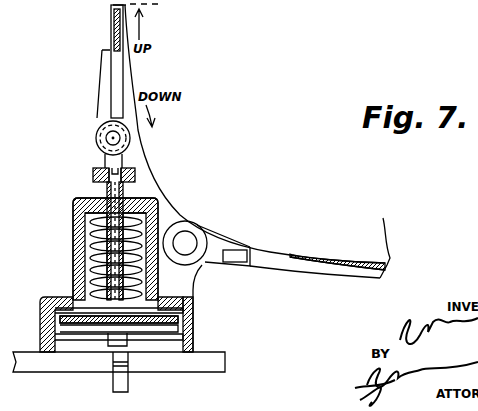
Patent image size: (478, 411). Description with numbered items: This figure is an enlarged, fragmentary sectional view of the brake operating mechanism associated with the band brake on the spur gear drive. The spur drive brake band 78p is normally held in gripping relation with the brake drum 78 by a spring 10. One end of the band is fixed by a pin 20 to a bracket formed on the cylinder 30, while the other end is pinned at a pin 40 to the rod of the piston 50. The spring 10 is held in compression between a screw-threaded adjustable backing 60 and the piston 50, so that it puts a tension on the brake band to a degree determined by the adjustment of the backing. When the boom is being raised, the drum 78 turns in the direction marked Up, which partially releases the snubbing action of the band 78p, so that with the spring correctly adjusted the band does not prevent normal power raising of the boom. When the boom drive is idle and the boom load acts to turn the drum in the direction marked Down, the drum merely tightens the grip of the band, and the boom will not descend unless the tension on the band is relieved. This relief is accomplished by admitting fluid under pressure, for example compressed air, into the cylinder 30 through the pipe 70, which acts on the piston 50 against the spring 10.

The spring 10 is at (74, 259).
The pin 20 is at (187, 246).
The cylinder 30 is at (194, 312).
The pin 40 is at (106, 136).
The piston 50 is at (40, 313).
The screw-threaded adjustable backing 60 is at (93, 190).
The pipe 70 is at (113, 386).
The brake drum 78 is at (160, 168).
The spur drive brake band 78p is at (111, 27).